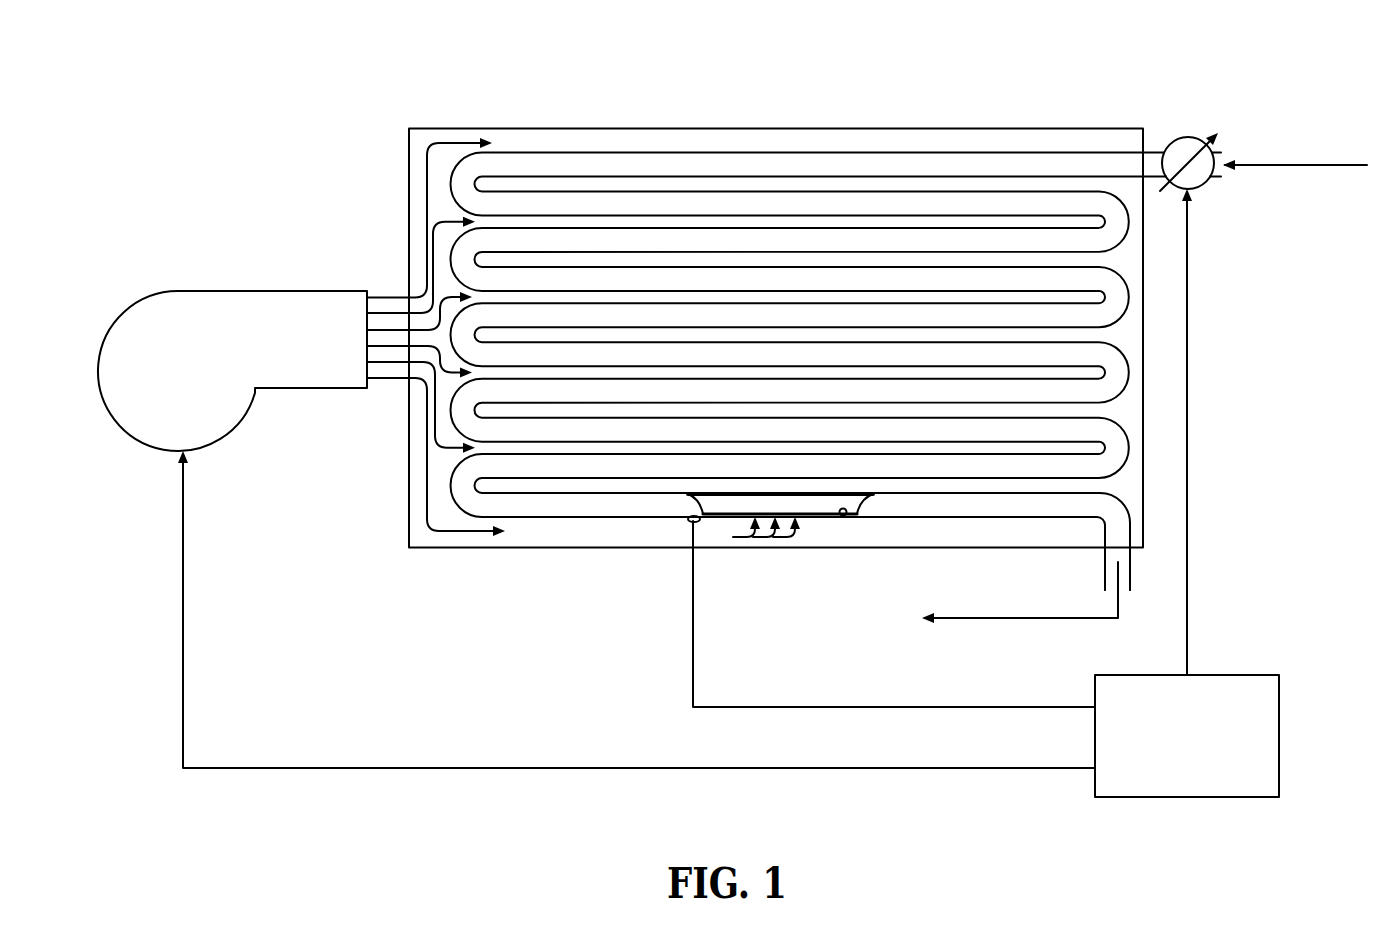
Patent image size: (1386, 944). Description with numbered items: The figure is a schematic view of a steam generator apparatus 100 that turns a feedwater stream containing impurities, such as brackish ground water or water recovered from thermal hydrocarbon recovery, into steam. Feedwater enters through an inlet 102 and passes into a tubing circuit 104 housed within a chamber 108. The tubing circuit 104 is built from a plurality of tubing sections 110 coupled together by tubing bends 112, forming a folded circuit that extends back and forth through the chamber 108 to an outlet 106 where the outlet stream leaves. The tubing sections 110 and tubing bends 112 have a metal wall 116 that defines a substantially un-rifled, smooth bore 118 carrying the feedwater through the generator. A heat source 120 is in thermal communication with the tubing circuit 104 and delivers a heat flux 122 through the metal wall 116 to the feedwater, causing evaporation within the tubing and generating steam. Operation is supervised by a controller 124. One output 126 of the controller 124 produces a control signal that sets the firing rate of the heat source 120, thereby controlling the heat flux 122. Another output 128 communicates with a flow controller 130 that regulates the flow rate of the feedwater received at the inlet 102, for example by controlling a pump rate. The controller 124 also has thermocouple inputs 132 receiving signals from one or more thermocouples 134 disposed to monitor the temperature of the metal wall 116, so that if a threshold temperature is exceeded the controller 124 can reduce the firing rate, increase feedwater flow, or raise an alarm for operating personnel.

The steam generator apparatus 100 is at (303, 73).
The inlet 102 is at (1160, 150).
The tubing circuit 104 is at (445, 172).
The outlet 106 is at (1104, 567).
The chamber 108 is at (663, 128).
The tubing sections 110 is at (620, 478).
The tubing bends 112 is at (452, 410).
The metal wall 116 is at (733, 515).
The un-rifled bore 118 is at (845, 518).
The heat source 120 is at (255, 290).
The heat flux 122 is at (803, 546).
The controller 124 is at (1203, 765).
The output 126 is at (1095, 768).
The output 128 is at (1189, 674).
The flow controller 130 is at (1186, 137).
The thermocouple inputs 132 is at (1095, 705).
The thermocouples 134 is at (690, 521).